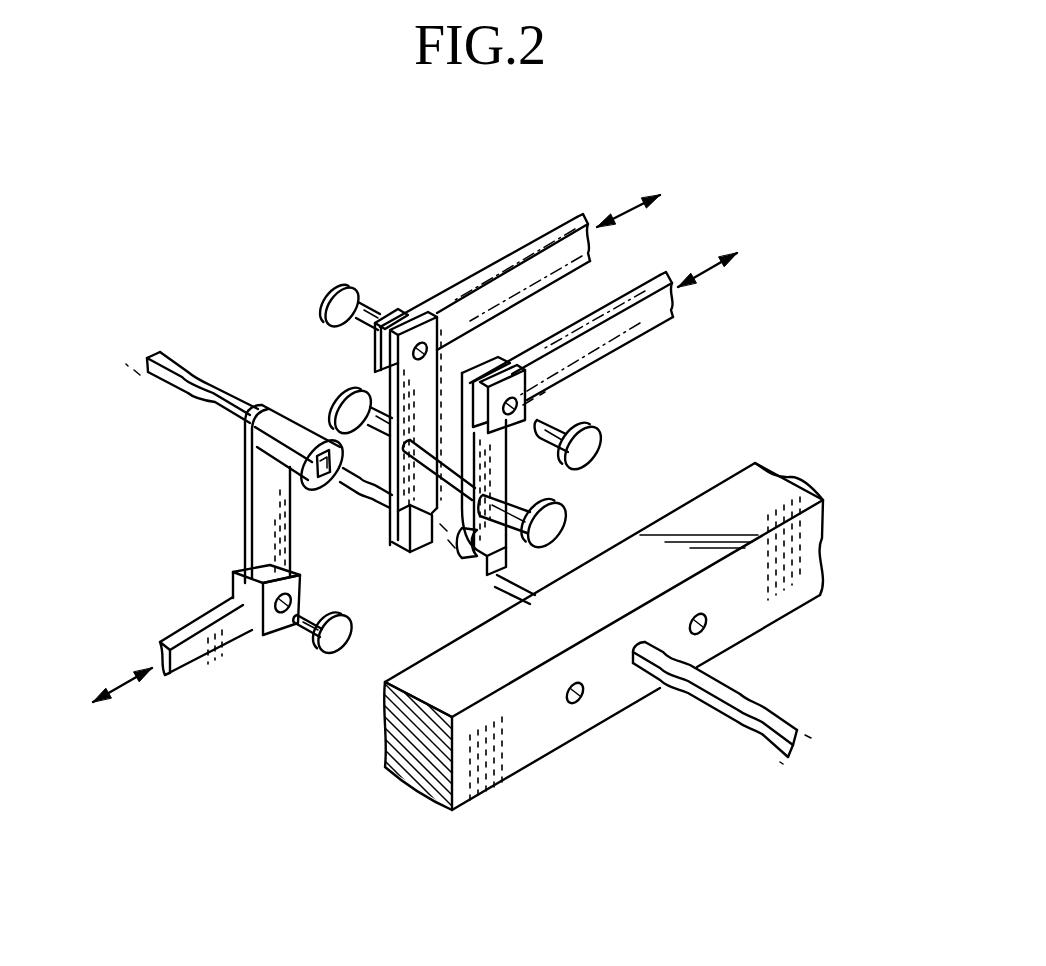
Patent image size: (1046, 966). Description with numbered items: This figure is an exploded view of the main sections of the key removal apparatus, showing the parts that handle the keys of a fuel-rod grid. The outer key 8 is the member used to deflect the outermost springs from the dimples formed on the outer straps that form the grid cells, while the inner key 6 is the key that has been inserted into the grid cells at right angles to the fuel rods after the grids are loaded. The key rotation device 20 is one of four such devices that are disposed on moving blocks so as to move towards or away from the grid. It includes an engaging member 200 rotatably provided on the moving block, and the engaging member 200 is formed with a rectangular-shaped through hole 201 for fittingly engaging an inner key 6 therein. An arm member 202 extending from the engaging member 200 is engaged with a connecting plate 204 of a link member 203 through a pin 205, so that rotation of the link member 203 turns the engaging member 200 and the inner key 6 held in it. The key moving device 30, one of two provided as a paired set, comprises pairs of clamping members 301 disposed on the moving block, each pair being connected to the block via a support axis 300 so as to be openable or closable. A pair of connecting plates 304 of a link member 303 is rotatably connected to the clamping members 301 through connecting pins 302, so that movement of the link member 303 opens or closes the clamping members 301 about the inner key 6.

The inner key 6 is at (730, 693).
The outer key 8 is at (727, 510).
The key rotation device 20 is at (270, 679).
The key moving device 30 is at (383, 267).
The engaging member 200 is at (296, 436).
The rectangular-shaped through hole 201 is at (325, 472).
The arm member 202 is at (267, 510).
The link member 203 is at (166, 594).
The connecting plate 204 is at (193, 650).
The pin 205 is at (337, 643).
The support axis 300 is at (553, 527).
The clamping member 301 is at (466, 352).
The connecting pin 302 is at (325, 298).
The link member 303 is at (542, 191).
The connecting plate 304 is at (568, 243).